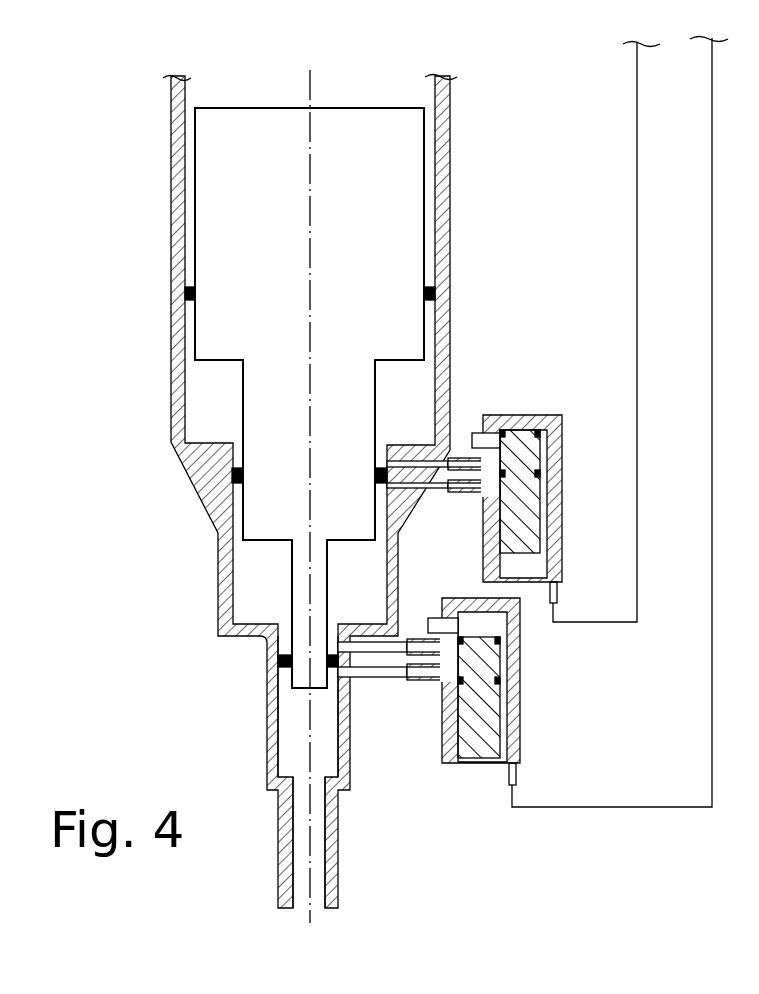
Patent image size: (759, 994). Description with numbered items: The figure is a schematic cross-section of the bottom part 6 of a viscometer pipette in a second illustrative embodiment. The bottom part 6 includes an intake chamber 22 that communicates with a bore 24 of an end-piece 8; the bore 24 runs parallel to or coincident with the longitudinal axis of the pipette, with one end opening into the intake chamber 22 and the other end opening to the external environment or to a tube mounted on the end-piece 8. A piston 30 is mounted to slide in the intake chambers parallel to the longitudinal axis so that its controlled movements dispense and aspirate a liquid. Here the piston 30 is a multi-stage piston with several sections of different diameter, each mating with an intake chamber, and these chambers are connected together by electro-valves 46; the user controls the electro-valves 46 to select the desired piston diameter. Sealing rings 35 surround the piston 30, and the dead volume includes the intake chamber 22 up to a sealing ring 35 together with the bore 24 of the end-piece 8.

The bottom part 6 is at (513, 178).
The end-piece 8 is at (337, 812).
The intake chamber 22 is at (287, 748).
The bore 24 is at (317, 868).
The piston 30 is at (427, 153).
The sealing ring 35 is at (182, 298).
The electro-valves 46 is at (527, 527).